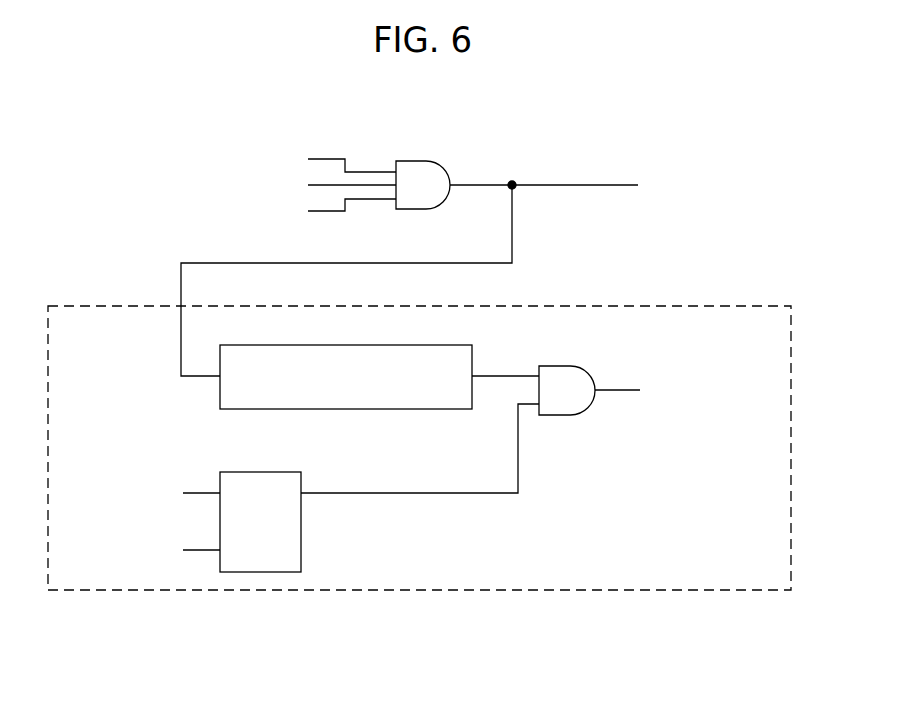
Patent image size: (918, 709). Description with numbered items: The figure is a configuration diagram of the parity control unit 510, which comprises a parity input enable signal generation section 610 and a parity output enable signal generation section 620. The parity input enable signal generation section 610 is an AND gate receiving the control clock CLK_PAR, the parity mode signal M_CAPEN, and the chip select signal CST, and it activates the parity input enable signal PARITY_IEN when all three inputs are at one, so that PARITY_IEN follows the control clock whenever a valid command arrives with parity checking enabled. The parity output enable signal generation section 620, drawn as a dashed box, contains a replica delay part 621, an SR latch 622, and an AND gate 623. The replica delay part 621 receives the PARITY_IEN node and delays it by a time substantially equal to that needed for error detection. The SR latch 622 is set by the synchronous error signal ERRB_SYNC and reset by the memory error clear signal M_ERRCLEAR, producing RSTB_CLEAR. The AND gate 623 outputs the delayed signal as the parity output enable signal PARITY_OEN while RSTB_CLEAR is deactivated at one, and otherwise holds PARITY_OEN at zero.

The parity control unit 510 is at (627, 113).
The parity input enable signal generation section 610 is at (417, 161).
The parity output enable signal generation section 620 is at (742, 304).
The replica delay part 621 is at (422, 344).
The SR latch 622 is at (253, 471).
The AND gate 623 is at (557, 366).